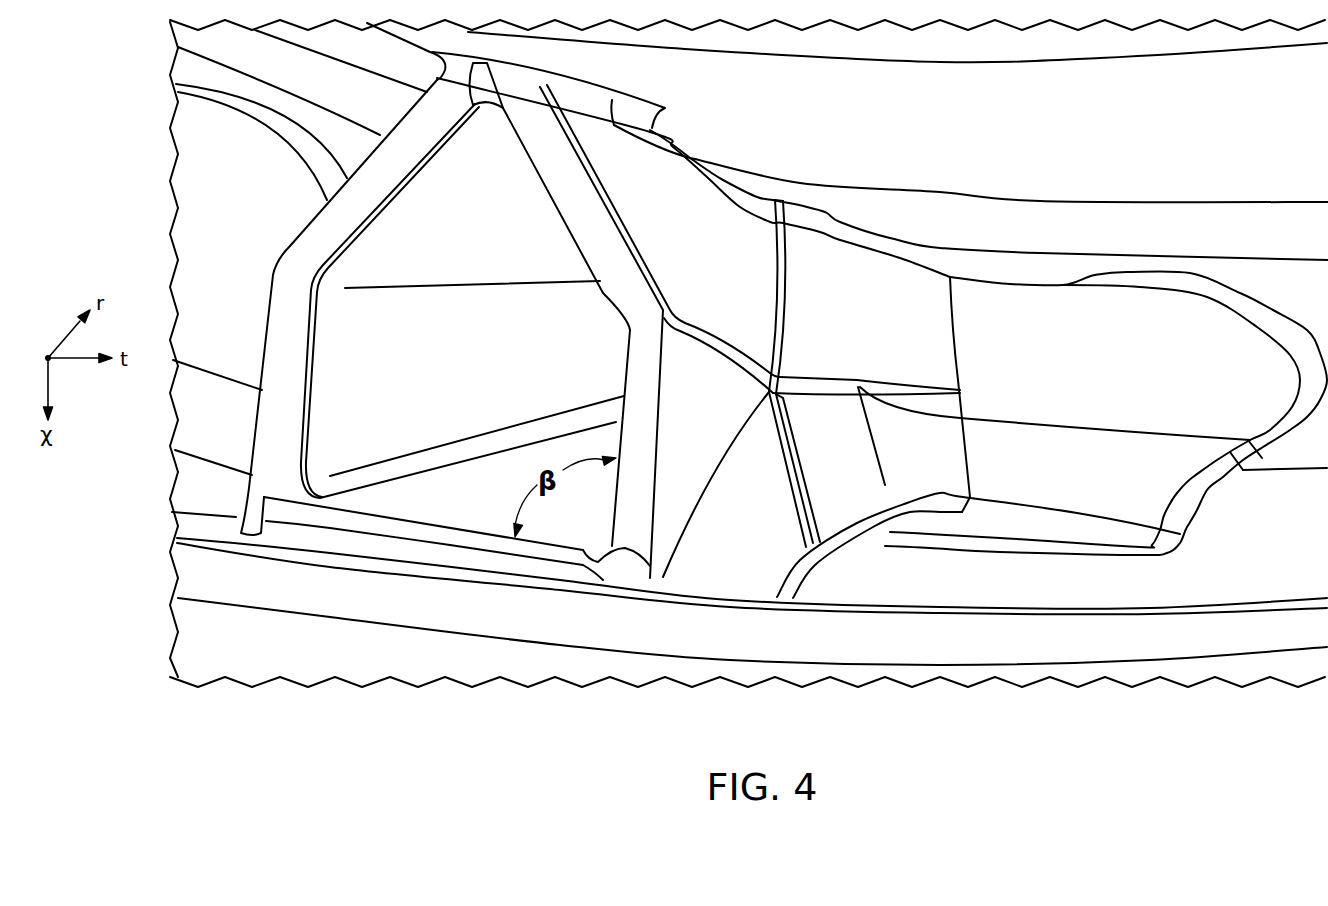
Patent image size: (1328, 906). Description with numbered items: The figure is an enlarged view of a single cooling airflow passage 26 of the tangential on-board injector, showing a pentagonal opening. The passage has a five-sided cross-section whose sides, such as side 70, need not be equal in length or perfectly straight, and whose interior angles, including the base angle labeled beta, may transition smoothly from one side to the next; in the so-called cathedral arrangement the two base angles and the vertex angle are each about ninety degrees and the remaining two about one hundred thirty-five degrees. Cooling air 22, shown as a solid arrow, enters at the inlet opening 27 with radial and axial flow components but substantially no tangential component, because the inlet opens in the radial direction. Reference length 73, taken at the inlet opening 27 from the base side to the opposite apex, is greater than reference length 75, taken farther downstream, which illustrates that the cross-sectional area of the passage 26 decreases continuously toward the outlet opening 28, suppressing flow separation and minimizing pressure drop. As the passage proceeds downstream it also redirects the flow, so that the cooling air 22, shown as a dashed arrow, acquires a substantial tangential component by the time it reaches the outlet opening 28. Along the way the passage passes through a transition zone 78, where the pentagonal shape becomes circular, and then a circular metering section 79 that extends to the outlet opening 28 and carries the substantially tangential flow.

The cooling air 22 is at (546, 341).
The cooling airflow passage 26 is at (430, 502).
The inlet opening 27 is at (580, 190).
The outlet opening 28 is at (1261, 312).
The side 70 is at (325, 280).
The reference length 73 is at (483, 105).
The reference length 75 is at (850, 537).
The transition zone 78 is at (800, 465).
The metering section 79 is at (967, 465).